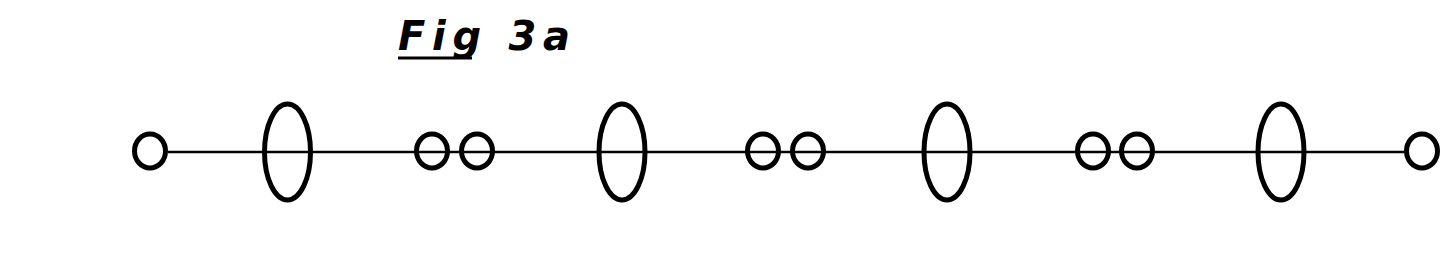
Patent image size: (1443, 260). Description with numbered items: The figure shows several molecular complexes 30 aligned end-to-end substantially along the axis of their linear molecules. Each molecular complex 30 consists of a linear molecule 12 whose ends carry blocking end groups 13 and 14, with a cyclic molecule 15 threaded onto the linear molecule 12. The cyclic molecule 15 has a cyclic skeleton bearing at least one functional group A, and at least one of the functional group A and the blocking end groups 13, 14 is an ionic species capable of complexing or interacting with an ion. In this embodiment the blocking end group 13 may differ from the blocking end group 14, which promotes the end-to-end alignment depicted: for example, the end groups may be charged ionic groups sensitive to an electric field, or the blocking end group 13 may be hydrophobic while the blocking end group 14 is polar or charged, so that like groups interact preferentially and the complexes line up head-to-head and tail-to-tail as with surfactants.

The linear molecule 12 is at (208, 154).
The blocking end group 13 is at (435, 173).
The blocking end group 14 is at (150, 170).
The cyclic molecule 15 is at (806, 137).
The molecular complex 30 is at (262, 87).
The functional group A is at (806, 111).